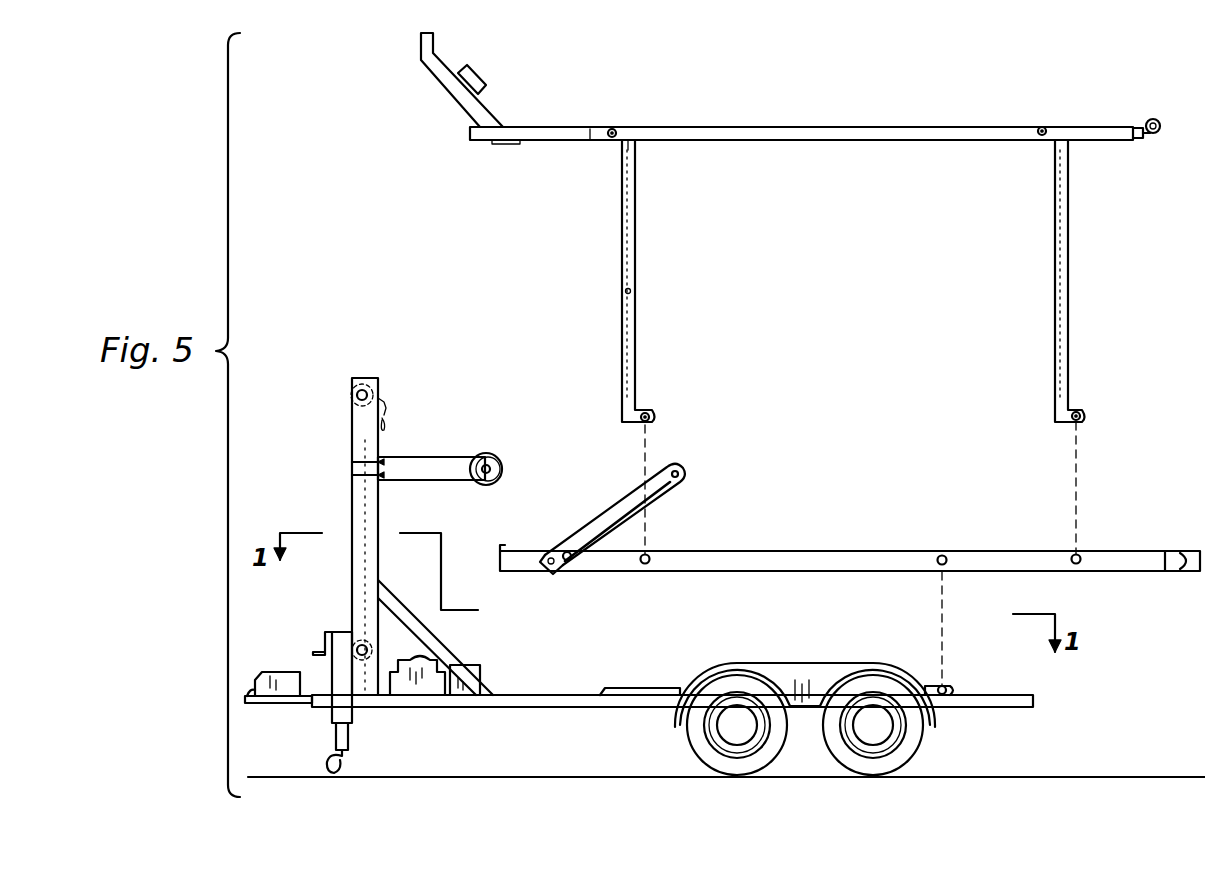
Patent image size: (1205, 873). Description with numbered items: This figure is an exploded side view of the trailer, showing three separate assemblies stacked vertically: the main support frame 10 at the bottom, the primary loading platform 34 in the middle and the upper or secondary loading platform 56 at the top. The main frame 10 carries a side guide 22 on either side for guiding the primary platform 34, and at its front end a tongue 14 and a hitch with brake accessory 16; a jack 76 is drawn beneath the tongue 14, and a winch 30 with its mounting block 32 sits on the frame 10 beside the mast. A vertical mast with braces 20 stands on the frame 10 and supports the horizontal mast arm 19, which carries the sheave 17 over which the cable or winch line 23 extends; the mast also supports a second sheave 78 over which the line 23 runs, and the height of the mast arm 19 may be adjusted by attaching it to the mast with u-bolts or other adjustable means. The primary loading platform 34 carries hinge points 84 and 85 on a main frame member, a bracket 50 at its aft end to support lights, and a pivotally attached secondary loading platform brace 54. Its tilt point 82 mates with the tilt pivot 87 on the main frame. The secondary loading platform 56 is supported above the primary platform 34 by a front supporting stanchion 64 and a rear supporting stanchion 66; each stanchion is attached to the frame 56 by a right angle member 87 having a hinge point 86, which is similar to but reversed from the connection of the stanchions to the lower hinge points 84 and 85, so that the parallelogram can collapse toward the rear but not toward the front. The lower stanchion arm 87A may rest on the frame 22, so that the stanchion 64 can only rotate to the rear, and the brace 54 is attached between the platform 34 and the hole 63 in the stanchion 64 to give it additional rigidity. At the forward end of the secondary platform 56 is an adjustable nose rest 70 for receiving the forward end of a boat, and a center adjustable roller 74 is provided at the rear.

The main support frame 10 is at (552, 710).
The tongue 14 is at (311, 705).
The hitch with brake accessory 16 is at (280, 700).
The sheave 17 is at (500, 460).
The horizontal mast arm 19 is at (431, 457).
The braces 20 is at (452, 652).
The side guide 22 is at (648, 693).
The cable or winch line 23 is at (350, 430).
The winch 30 is at (420, 686).
The mounting block 32 is at (481, 686).
The primary loading platform 34 is at (803, 572).
The bracket 50 is at (1172, 573).
The secondary loading platform brace 54 is at (600, 514).
The secondary loading platform 56 is at (849, 127).
The hole 63 is at (625, 290).
The front supporting stanchion 64 is at (621, 228).
The rear supporting stanchion 66 is at (1068, 224).
The adjustable nose rest 70 is at (462, 95).
The center adjustable roller 74 is at (1160, 121).
The jack with hook 76 is at (355, 735).
The sheave 78 is at (368, 390).
The main platform tilt point 82 is at (948, 687).
The hinge point 84 is at (1080, 556).
The hinge point 85 is at (651, 556).
The hinge point 86 is at (608, 129).
The right angle member / tilt pivot 87 is at (632, 130).
The lower stanchion arm 87A is at (641, 412).